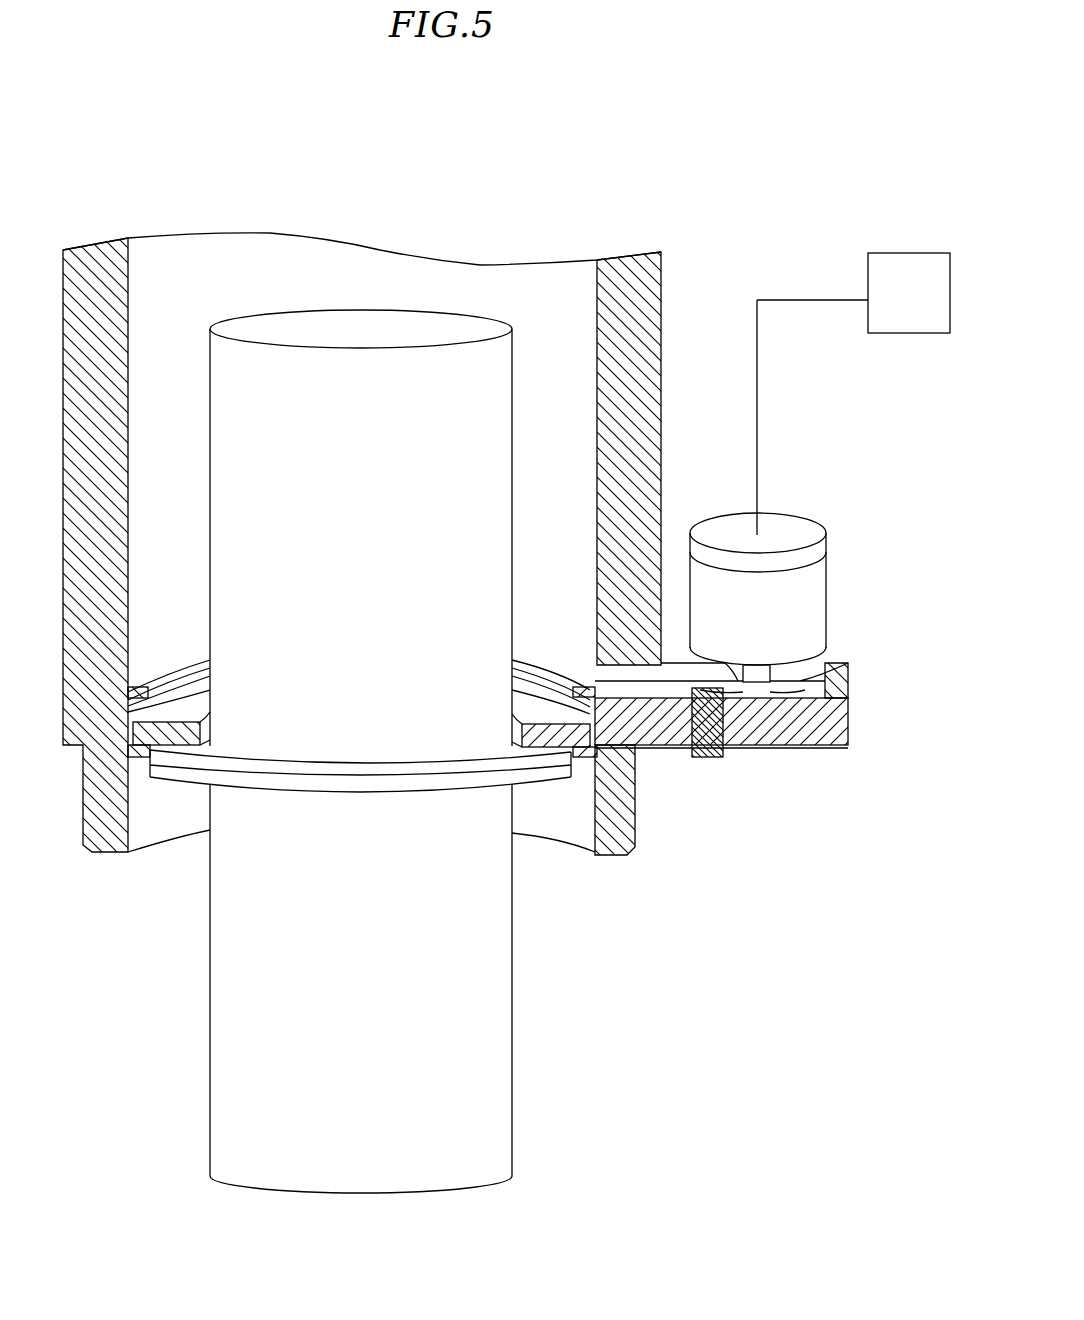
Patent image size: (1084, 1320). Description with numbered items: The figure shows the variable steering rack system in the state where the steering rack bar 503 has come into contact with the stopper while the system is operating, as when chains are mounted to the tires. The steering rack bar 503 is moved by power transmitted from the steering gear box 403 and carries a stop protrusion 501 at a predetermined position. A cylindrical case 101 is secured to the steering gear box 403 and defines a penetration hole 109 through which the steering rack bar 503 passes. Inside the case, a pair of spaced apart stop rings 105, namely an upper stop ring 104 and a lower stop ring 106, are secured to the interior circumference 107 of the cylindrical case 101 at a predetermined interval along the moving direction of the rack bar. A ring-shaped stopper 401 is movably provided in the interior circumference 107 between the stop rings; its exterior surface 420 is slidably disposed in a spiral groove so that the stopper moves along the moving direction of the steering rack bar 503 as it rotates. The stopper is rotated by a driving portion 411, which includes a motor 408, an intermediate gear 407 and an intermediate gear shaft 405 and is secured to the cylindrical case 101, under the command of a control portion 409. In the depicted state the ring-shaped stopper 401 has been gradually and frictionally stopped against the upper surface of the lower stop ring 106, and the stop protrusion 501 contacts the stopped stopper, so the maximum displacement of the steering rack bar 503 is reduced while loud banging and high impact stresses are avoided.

The cylindrical case 101 is at (627, 852).
The upper stop ring 104 is at (130, 690).
The pair of spaced apart stop rings 105 is at (140, 926).
The lower stop ring 106 is at (148, 758).
The interior circumference 107 is at (180, 822).
The penetration hole 109 is at (528, 850).
The ring-shaped stopper 401 is at (553, 742).
The steering gear box 403 is at (503, 293).
The intermediate gear shaft 405 is at (710, 756).
The intermediate gear 407 is at (785, 728).
The motor 408 is at (786, 524).
The control portion 409 is at (908, 253).
The driving portion 411 is at (862, 545).
The exterior surface 420 is at (597, 742).
The stop protrusion 501 is at (328, 784).
The steering rack bar 503 is at (473, 1042).